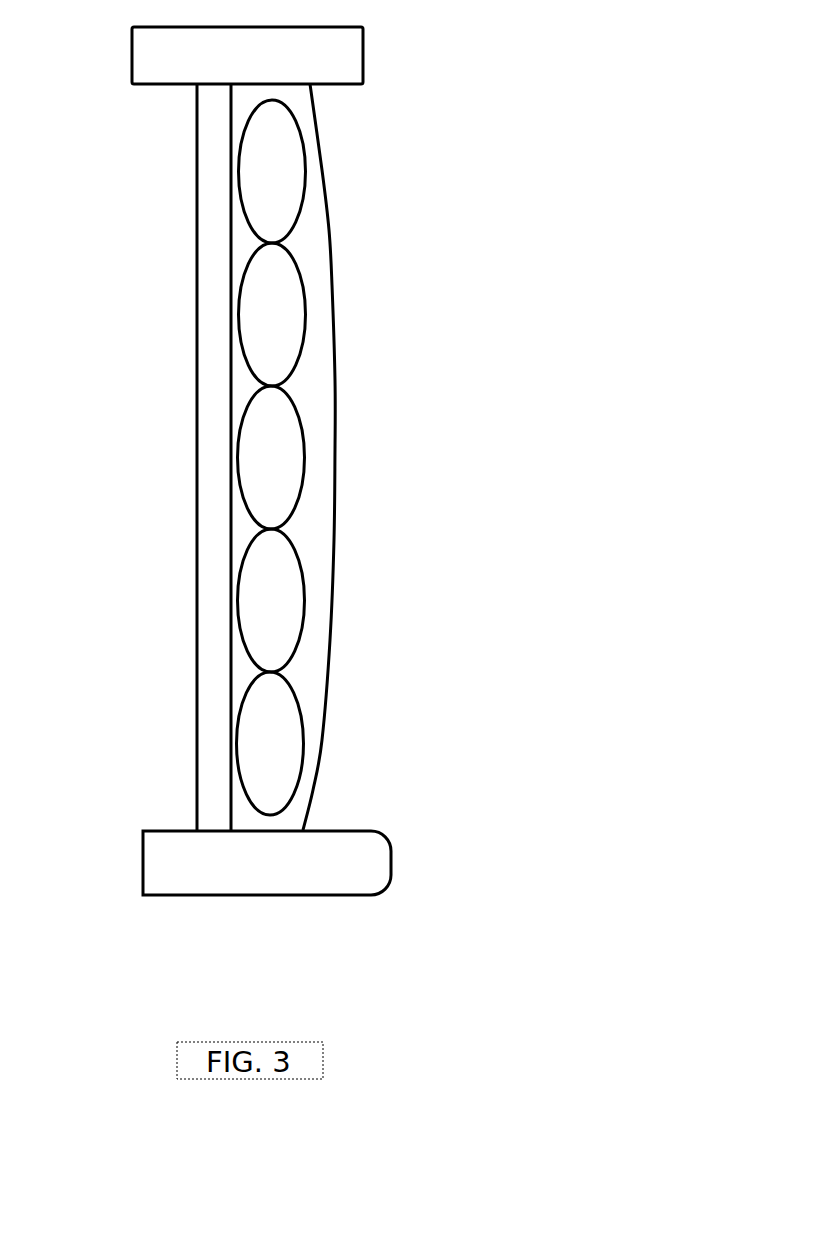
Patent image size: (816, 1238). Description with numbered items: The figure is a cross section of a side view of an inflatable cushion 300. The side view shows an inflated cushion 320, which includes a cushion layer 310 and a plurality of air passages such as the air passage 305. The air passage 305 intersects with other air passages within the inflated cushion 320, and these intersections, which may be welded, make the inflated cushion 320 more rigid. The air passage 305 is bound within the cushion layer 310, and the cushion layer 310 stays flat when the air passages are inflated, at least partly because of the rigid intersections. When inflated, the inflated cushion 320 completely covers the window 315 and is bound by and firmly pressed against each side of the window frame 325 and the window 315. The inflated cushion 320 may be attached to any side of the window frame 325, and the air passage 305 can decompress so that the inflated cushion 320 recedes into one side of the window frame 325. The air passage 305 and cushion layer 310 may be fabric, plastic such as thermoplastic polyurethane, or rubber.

The inflatable cushion 300 is at (586, 980).
The air passage 305 is at (303, 158).
The cushion layer 310 is at (328, 228).
The window 315 is at (197, 435).
The inflated cushion 320 is at (315, 368).
The window frame 325 is at (133, 82).